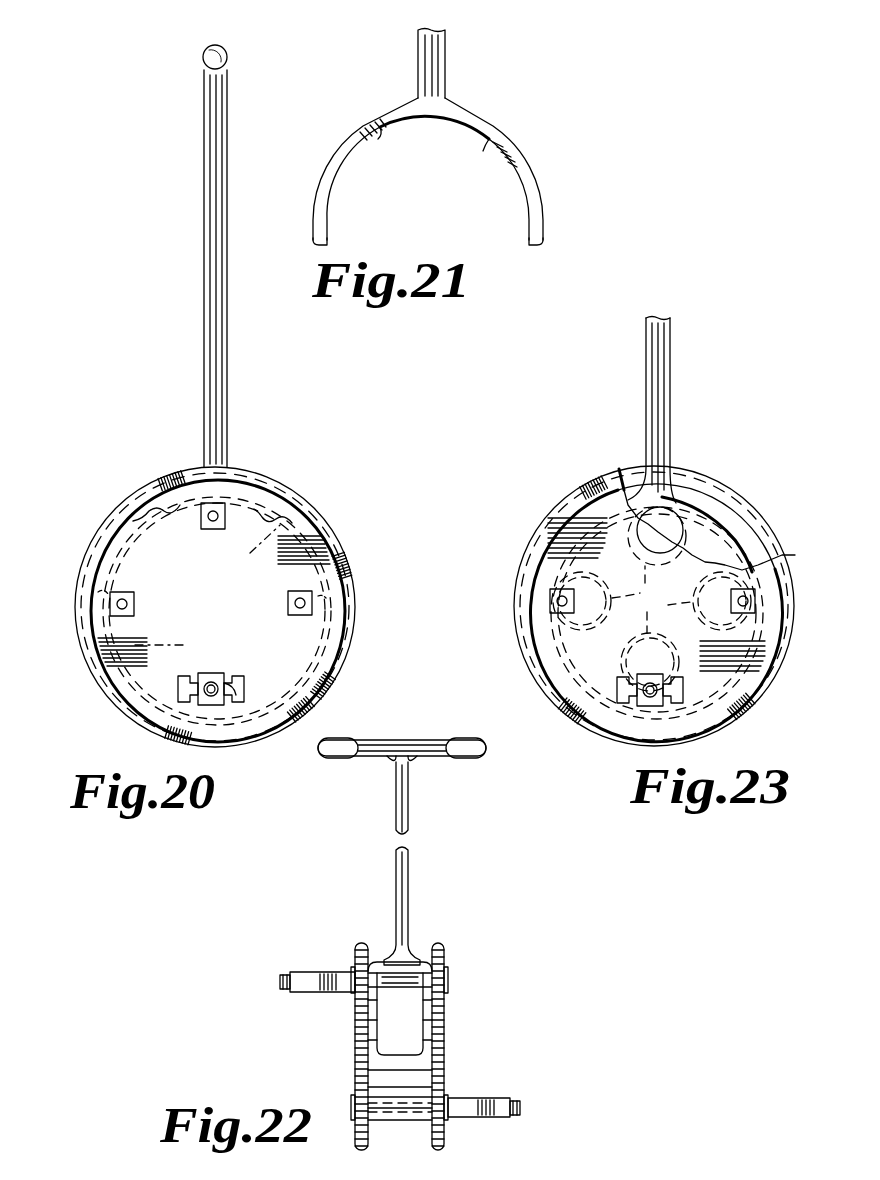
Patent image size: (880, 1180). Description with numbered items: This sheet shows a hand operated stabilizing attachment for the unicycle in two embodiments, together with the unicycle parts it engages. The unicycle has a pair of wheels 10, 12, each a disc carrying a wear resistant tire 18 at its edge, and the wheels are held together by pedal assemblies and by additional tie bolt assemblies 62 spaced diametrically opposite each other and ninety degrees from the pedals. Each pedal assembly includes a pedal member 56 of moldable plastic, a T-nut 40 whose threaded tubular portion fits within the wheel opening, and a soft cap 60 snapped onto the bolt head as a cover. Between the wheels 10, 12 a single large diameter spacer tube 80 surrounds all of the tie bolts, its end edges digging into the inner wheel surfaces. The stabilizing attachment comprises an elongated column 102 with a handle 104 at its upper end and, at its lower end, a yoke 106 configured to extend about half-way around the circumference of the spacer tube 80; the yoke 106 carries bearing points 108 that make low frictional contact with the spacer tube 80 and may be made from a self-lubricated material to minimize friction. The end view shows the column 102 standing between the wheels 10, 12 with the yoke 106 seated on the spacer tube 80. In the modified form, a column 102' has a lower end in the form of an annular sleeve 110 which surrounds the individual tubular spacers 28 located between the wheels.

In FIG. 23, the wheel 10 is at (585, 693).
In FIG. 22, the wheel 10 is at (357, 1035).
In FIG. 23, the wheel 12 is at (745, 530).
In FIG. 22, the wheel 12 is at (445, 1037).
In FIG. 20, the wear resistant tire 18 is at (171, 476).
In FIG. 23, the wear resistant tire 18 is at (567, 505).
In FIG. 22, the wear resistant tire 18 is at (366, 943).
In FIG. 23, the tubular spacer 28 is at (652, 606).
In FIG. 20, the T-nut 40 is at (217, 505).
In FIG. 20, the pedal member 56 is at (182, 697).
In FIG. 22, the pedal member 56 is at (313, 990).
In FIG. 20, the cap 60 is at (234, 703).
In FIG. 22, the cap 60 is at (280, 993).
In FIG. 20, the additional tie bolt assembly 62 is at (132, 587).
In FIG. 20, the tubular spacer 80 is at (214, 595).
In FIG. 22, the tubular spacer 80 is at (415, 1077).
In FIG. 20, the column 102 is at (166, 268).
In FIG. 21, the column 102 is at (402, 64).
In FIG. 22, the column 102 is at (428, 860).
In FIG. 23, the column 102' is at (628, 410).
In FIG. 20, the handle 104 is at (223, 47).
In FIG. 22, the handle 104 is at (402, 740).
In FIG. 20, the yoke 106 is at (142, 518).
In FIG. 21, the yoke 106 is at (320, 188).
In FIG. 22, the yoke 106 is at (390, 1037).
In FIG. 21, the bearing points 108 is at (383, 142).
In FIG. 23, the annular sleeve 110 is at (718, 518).